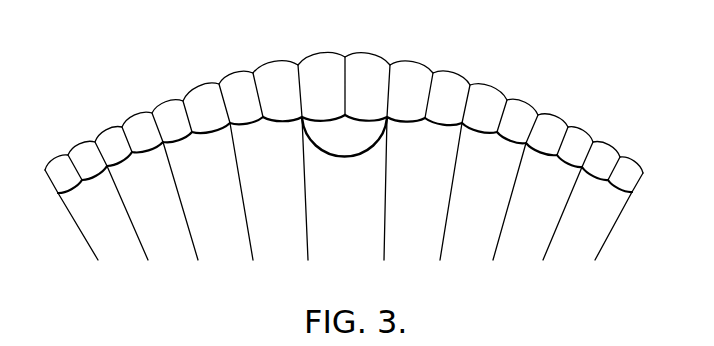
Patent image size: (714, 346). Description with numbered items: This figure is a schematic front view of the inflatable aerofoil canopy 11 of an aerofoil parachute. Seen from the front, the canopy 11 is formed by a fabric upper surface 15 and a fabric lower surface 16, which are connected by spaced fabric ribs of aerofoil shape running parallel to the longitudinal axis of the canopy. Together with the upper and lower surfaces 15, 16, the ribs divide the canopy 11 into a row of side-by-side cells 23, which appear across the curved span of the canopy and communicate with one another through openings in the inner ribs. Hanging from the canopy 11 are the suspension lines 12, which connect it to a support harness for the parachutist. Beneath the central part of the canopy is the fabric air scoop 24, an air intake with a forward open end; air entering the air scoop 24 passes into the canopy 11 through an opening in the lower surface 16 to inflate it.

The inflatable aerofoil canopy 11 is at (344, 146).
The suspension lines 12 is at (306, 247).
The upper surface 15 is at (414, 61).
The lower surface 16 is at (410, 120).
The side-by-side cells 23 is at (190, 92).
The air scoop 24 is at (352, 158).